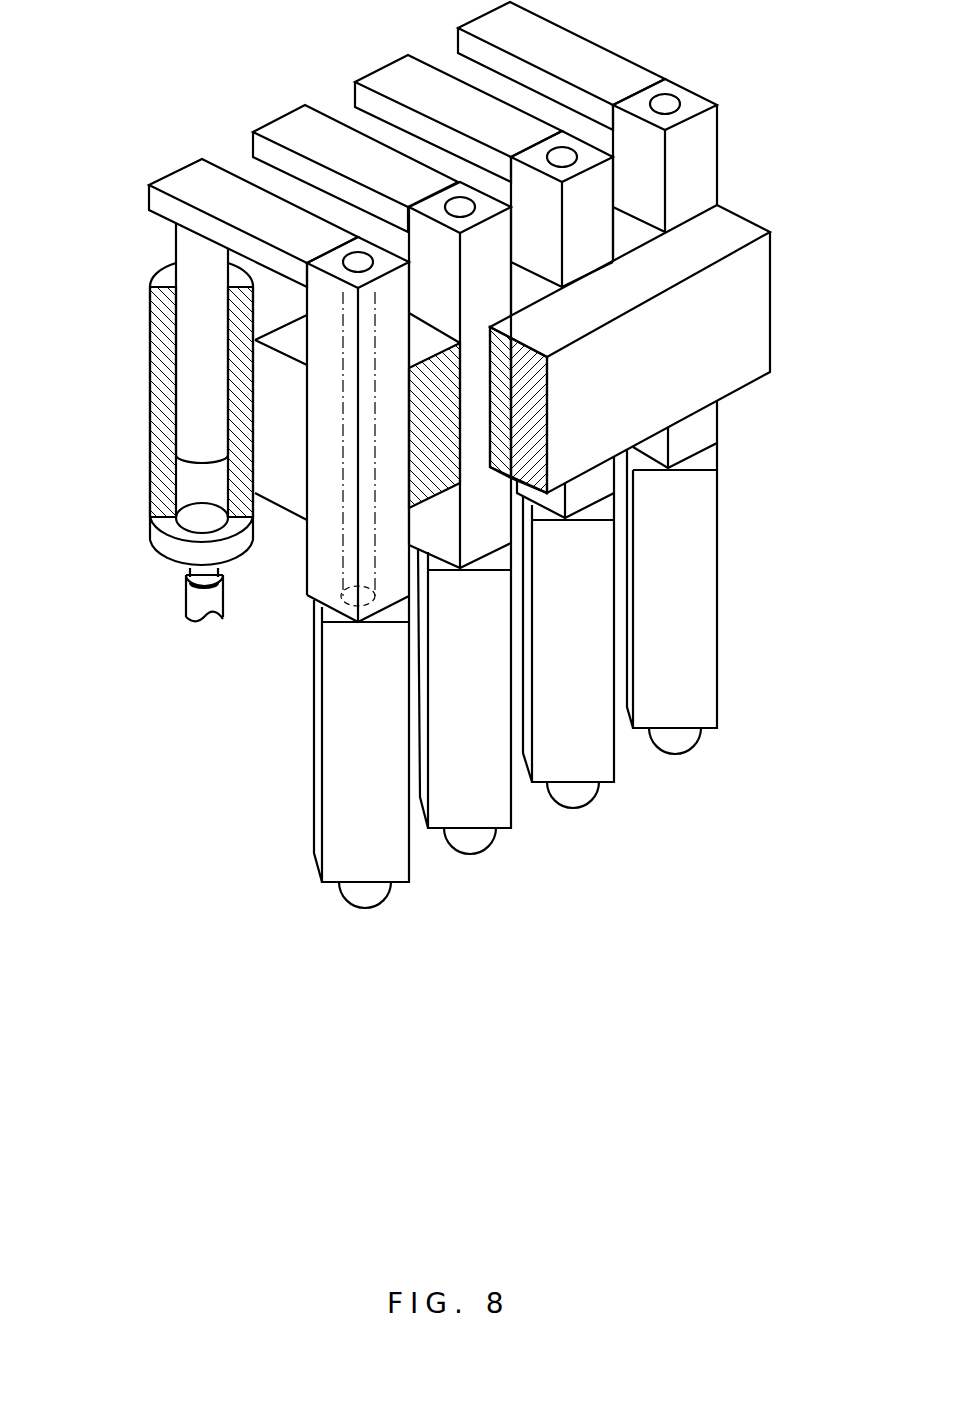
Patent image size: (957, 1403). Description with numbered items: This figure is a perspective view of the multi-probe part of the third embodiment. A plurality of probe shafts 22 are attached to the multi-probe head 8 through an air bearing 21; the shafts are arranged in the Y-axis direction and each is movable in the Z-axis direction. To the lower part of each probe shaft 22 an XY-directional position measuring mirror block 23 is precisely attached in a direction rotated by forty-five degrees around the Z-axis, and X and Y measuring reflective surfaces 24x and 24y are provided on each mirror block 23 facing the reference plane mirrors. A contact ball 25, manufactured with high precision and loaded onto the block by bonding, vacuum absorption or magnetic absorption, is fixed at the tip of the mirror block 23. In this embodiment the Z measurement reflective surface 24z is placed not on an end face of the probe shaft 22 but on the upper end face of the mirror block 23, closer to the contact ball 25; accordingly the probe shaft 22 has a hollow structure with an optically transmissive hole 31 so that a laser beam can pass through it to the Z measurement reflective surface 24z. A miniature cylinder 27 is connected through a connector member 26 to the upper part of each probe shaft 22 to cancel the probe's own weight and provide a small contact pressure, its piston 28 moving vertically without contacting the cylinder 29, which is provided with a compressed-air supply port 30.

The multi-probe head 8 is at (748, 320).
The air bearing 21 is at (633, 242).
The probe shaft 22 is at (330, 332).
The XY-directional position measuring mirror block 23 is at (503, 717).
The X measuring reflective surface 24x is at (315, 732).
The Y measuring reflective surface 24y is at (315, 826).
The Z measurement reflective surface 24z is at (322, 608).
The contact ball 25 is at (373, 910).
The connector member 26 is at (198, 177).
The miniature cylinder 27 is at (144, 357).
The piston 28 is at (185, 246).
The cylinder 29 is at (150, 440).
The compressed-air supply port 30 is at (197, 604).
The optically transmissive hole 31 is at (357, 258).